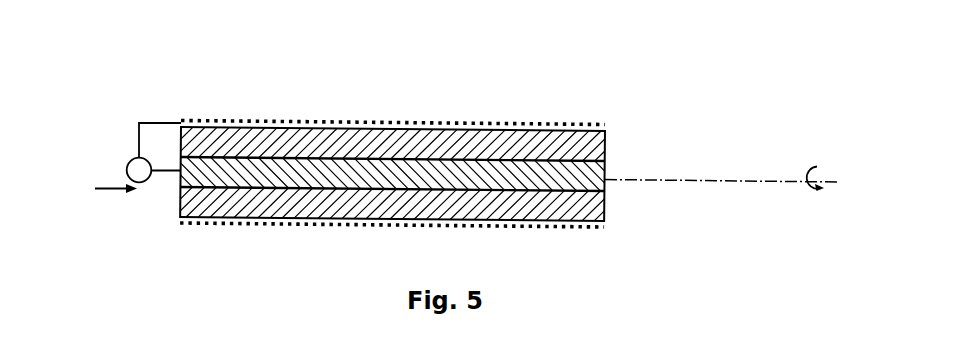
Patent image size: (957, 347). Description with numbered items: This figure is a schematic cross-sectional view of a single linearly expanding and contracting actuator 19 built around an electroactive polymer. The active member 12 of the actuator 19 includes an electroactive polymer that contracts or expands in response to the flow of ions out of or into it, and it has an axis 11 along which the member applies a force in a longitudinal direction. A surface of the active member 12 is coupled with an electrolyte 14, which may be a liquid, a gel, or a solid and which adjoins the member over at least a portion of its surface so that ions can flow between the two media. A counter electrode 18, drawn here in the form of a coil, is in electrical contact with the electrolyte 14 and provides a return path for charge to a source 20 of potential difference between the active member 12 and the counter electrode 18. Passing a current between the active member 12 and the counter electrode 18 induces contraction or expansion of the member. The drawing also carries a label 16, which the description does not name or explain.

The axis 11 is at (812, 194).
The active member 12 is at (178, 182).
The electrolyte 14 is at (606, 130).
The applied input 16 is at (99, 191).
The counter electrode 18 is at (506, 223).
The actuator 19 is at (397, 150).
The source 20 is at (129, 163).